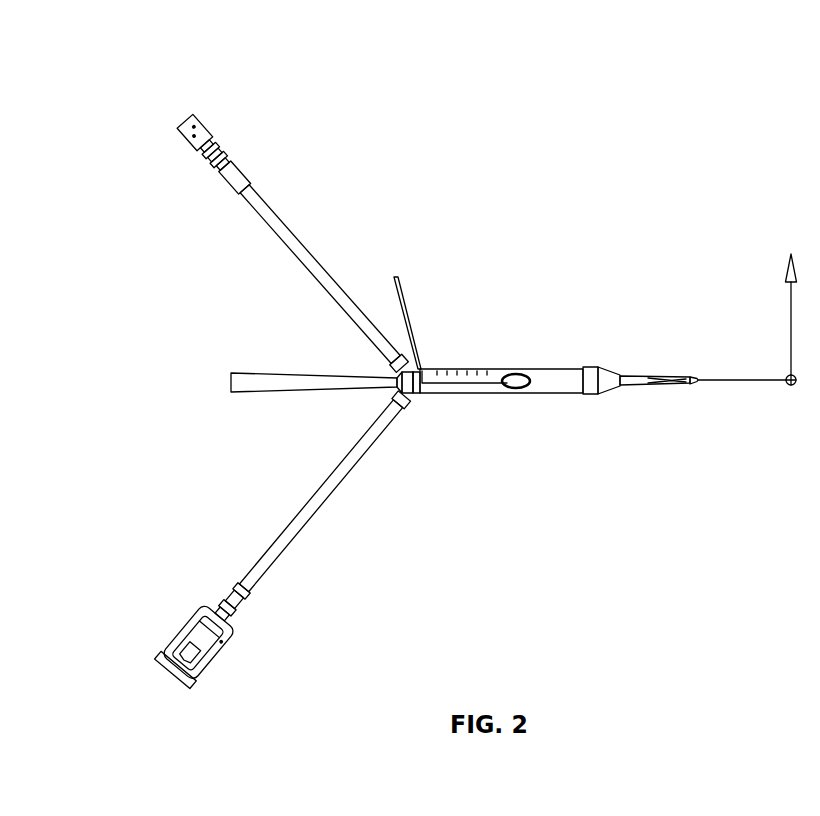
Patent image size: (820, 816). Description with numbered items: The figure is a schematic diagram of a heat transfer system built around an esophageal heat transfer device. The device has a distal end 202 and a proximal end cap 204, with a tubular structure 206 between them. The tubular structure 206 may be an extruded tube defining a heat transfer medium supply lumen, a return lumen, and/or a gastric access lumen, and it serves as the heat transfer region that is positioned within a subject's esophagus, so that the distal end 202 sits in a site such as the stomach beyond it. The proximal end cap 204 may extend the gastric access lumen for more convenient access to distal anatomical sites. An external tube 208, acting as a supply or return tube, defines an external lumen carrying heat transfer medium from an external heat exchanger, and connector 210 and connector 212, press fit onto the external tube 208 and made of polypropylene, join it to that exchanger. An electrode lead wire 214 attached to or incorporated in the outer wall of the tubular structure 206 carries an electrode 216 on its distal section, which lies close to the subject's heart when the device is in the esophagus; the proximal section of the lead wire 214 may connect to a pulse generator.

The distal end 202 is at (693, 384).
The proximal end cap 204 is at (242, 371).
The tubular structure 206 is at (573, 368).
The external tube 208 is at (303, 500).
The connector 210 is at (152, 653).
The connector 212 is at (188, 110).
The electrode lead wire 214 is at (412, 290).
The electrode 216 is at (522, 400).